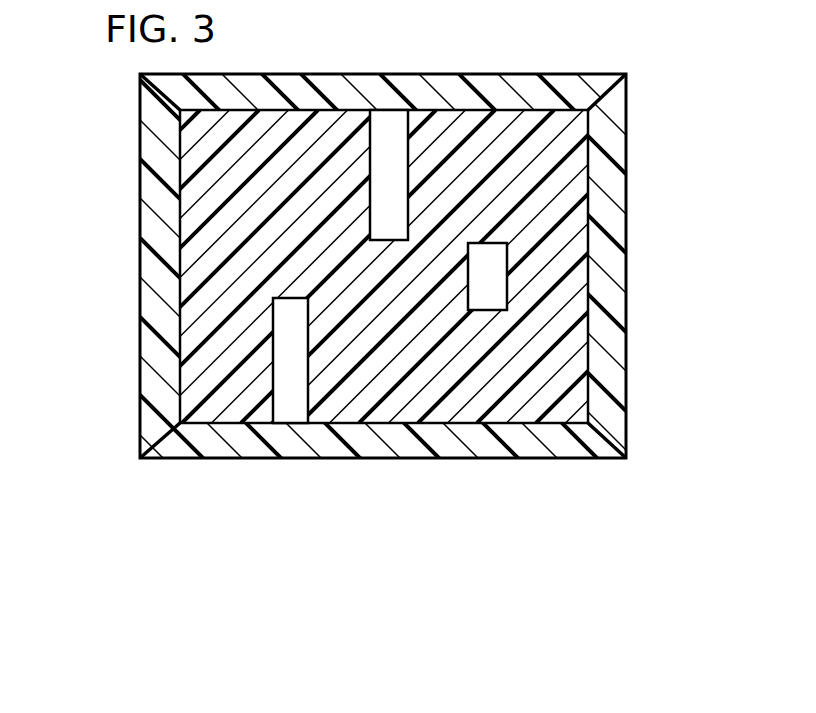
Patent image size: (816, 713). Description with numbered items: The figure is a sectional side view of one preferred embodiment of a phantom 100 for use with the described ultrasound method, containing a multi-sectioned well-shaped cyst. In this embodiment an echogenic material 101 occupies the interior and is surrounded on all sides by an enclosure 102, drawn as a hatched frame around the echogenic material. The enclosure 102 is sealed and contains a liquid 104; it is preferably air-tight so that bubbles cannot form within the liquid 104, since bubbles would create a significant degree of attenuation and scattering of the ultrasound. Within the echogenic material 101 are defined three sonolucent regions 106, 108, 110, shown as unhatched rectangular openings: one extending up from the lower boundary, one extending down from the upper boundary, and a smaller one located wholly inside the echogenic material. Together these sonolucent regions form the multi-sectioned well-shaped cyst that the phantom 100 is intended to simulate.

The phantom 100 is at (110, 140).
The echogenic material 101 is at (530, 124).
The enclosure 102 is at (139, 283).
The liquid 104 is at (578, 278).
The sonolucent region 106 is at (287, 390).
The sonolucent region 108 is at (393, 127).
The sonolucent region 110 is at (482, 308).